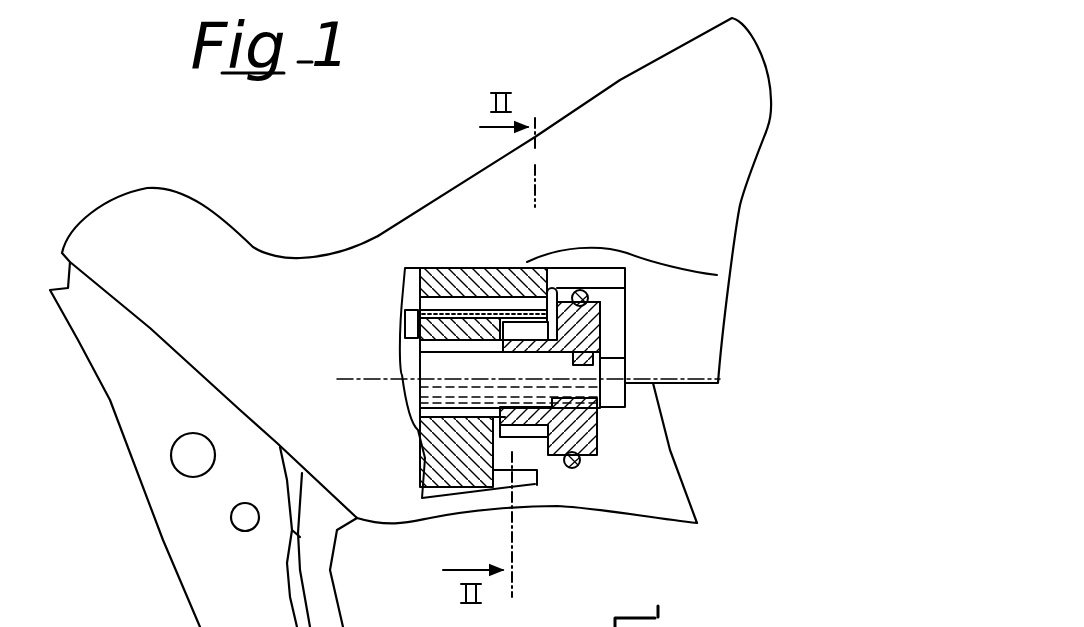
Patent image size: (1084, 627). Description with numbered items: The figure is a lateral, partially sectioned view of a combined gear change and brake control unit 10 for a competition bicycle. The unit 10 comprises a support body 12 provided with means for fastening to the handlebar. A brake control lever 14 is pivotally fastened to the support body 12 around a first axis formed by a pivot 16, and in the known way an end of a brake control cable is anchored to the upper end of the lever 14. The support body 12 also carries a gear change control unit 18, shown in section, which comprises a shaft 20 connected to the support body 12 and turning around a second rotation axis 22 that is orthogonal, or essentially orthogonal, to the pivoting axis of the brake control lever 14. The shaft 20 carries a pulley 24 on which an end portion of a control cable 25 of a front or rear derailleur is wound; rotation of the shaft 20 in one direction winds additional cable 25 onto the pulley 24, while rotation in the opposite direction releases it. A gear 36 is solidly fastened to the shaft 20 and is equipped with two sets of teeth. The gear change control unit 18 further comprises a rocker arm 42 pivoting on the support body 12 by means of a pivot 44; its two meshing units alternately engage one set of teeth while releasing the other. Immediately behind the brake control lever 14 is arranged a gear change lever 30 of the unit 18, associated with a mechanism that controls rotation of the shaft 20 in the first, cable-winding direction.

The combined gear change and brake control unit 10 is at (384, 178).
The support body 12 is at (600, 92).
The brake control lever 14 is at (163, 555).
The pivot 16 is at (244, 522).
The gear change control unit 18 is at (492, 262).
The shaft 20 is at (440, 363).
The rotation axis 22 is at (352, 381).
The pulley 24 is at (600, 270).
The control cable 25 is at (590, 292).
The gear change lever 30 is at (338, 613).
The gear 36 is at (538, 438).
The rocker arm 42 is at (543, 262).
The pivot 44 is at (466, 280).